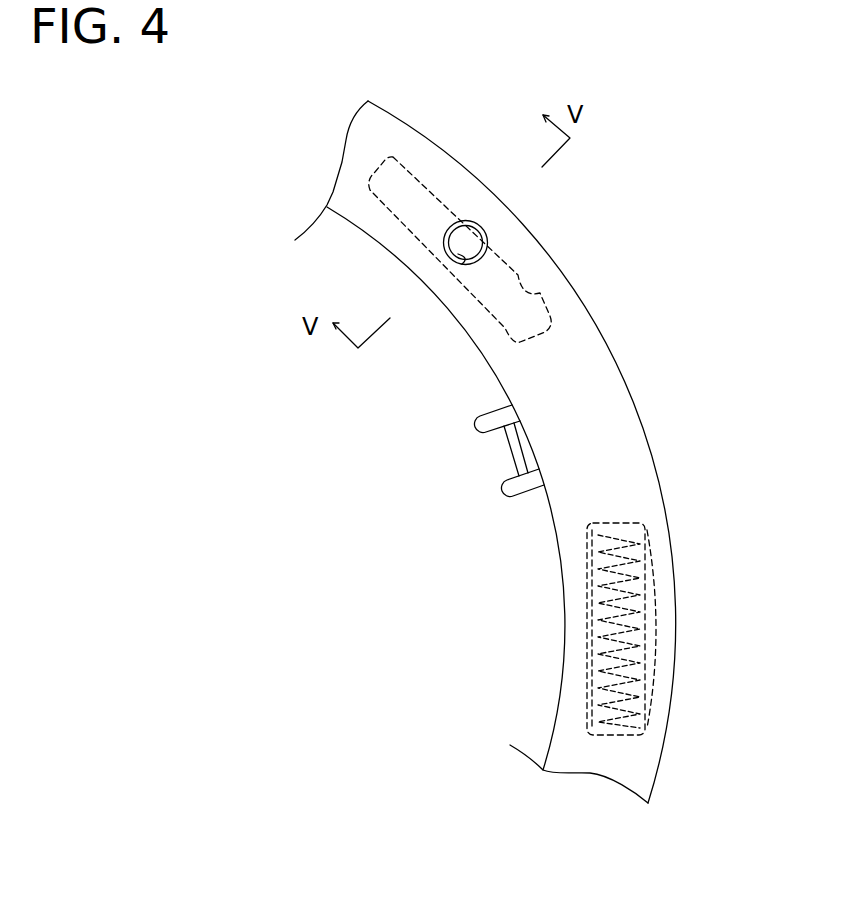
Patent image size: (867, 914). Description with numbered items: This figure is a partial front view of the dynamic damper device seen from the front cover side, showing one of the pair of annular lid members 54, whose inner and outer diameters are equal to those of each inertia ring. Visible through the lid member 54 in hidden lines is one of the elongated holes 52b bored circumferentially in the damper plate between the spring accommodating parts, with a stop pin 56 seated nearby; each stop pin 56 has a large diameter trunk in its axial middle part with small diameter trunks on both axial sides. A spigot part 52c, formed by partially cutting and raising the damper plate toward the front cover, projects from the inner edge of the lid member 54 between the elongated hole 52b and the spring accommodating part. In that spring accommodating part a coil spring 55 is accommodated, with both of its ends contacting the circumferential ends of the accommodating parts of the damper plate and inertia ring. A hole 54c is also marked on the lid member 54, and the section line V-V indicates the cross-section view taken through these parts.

The lid member 54 is at (615, 408).
The through hole 54c is at (465, 257).
The elongated hole 52b is at (538, 293).
The spigot part 52c is at (516, 446).
The coil spring 55 is at (637, 547).
The stop pin 56 is at (473, 242).